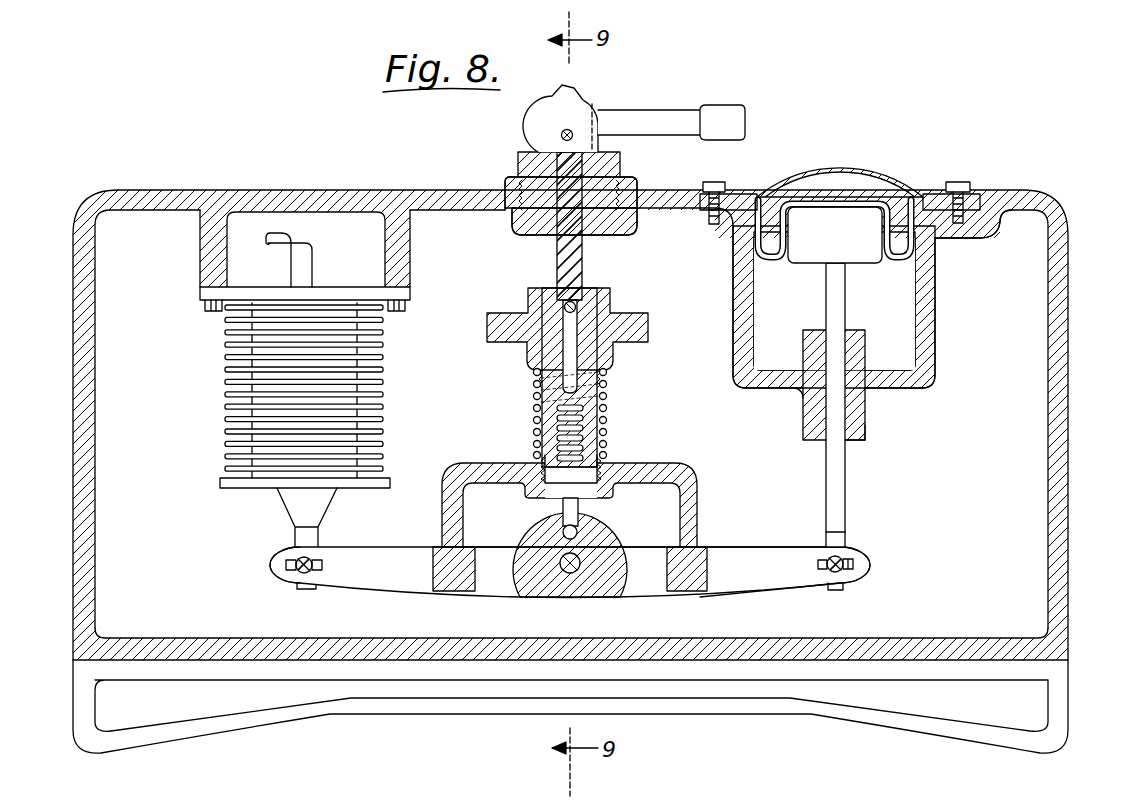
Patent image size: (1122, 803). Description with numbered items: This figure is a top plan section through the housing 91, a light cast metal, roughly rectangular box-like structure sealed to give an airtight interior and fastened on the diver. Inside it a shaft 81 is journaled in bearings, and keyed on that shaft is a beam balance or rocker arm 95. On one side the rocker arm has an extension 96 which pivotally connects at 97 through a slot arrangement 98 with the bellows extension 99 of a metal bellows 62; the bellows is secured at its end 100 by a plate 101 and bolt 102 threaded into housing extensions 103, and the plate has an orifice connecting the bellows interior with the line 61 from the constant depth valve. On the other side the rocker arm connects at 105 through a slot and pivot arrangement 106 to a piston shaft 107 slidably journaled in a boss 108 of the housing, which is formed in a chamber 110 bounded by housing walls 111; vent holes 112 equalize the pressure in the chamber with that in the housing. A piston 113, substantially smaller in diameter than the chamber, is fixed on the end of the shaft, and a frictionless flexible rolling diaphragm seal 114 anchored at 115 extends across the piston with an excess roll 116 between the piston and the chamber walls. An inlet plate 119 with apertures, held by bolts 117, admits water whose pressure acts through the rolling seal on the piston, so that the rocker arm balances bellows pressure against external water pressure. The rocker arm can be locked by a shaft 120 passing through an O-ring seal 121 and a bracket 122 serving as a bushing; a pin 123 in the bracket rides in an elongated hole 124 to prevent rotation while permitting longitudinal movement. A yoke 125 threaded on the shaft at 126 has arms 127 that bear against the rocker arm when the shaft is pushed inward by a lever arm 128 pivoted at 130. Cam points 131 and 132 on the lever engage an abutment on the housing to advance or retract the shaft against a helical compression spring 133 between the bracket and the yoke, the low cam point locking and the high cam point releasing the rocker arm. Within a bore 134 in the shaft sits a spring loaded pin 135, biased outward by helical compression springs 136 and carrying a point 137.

The line 61 is at (306, 250).
The metal bellows 62 is at (230, 386).
The shaft 81 is at (578, 596).
The housing 91 is at (122, 202).
The rocker arm 95 is at (740, 588).
The extension 96 is at (370, 588).
The pivot 97 is at (312, 558).
The slot arrangement 98 is at (290, 570).
The bellows extension 99 is at (288, 506).
The end of bellows 100 is at (205, 306).
The plate 101 is at (405, 295).
The bolt 102 is at (402, 313).
The housing extensions 103 is at (243, 241).
The connection 105 is at (843, 568).
The slot and pivot arrangement 106 is at (852, 556).
The piston shaft 107 is at (846, 470).
The boss 108 is at (862, 435).
The chamber 110 is at (890, 322).
The housing walls 111 is at (932, 283).
The vent holes 112 is at (880, 395).
The piston 113 is at (860, 247).
The flexible rolling diaphragm seal 114 is at (958, 205).
The anchor 115 is at (748, 200).
The excess roll of seal 116 is at (770, 256).
The bolts 117 is at (728, 165).
The inlet plate 119 is at (925, 200).
The shaft 120 is at (584, 264).
The O-ring seal 121 is at (548, 236).
The bracket 122 is at (648, 331).
The pin 123 is at (564, 306).
The elongated hole 124 is at (578, 362).
The yoke 125 is at (706, 496).
The threaded connection 126 is at (599, 470).
The arm of yoke 127 is at (706, 530).
The lever arm 128 is at (665, 118).
The pivot 130 is at (572, 131).
The cam point 131 is at (560, 95).
The cam point 132 is at (518, 164).
The helical compression spring 133 is at (608, 396).
The bore 134 is at (545, 452).
The spring loaded pin 135 is at (580, 512).
The helical compression springs 136 is at (557, 421).
The point 137 is at (579, 529).